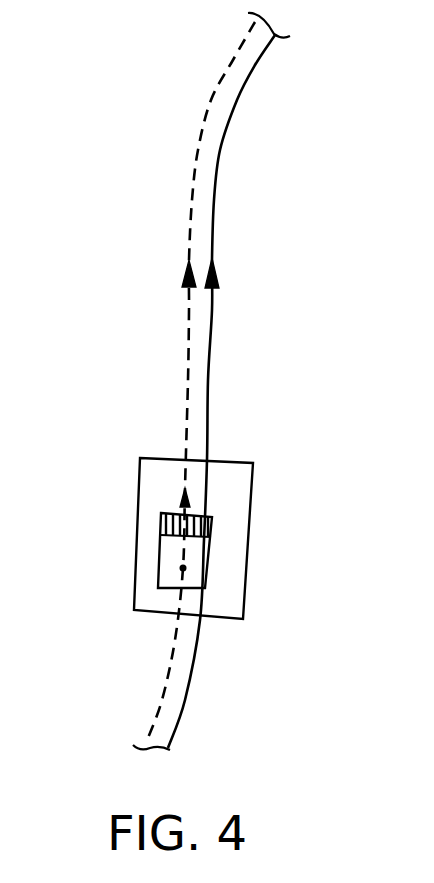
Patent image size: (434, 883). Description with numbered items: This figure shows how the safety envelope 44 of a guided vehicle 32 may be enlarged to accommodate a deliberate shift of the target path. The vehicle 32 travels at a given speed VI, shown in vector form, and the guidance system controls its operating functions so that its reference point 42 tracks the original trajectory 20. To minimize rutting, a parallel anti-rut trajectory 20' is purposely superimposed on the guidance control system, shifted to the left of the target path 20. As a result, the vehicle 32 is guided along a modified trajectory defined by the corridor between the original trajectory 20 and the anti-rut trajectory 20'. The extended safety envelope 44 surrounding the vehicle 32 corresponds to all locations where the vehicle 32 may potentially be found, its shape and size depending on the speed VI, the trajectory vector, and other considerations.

The trajectory 20 is at (227, 381).
The anti-rut trajectory 20' is at (161, 380).
The safety envelope 44 is at (223, 475).
The vehicle 32 is at (197, 578).
The reference point 42 is at (183, 568).
The speed VI is at (185, 553).